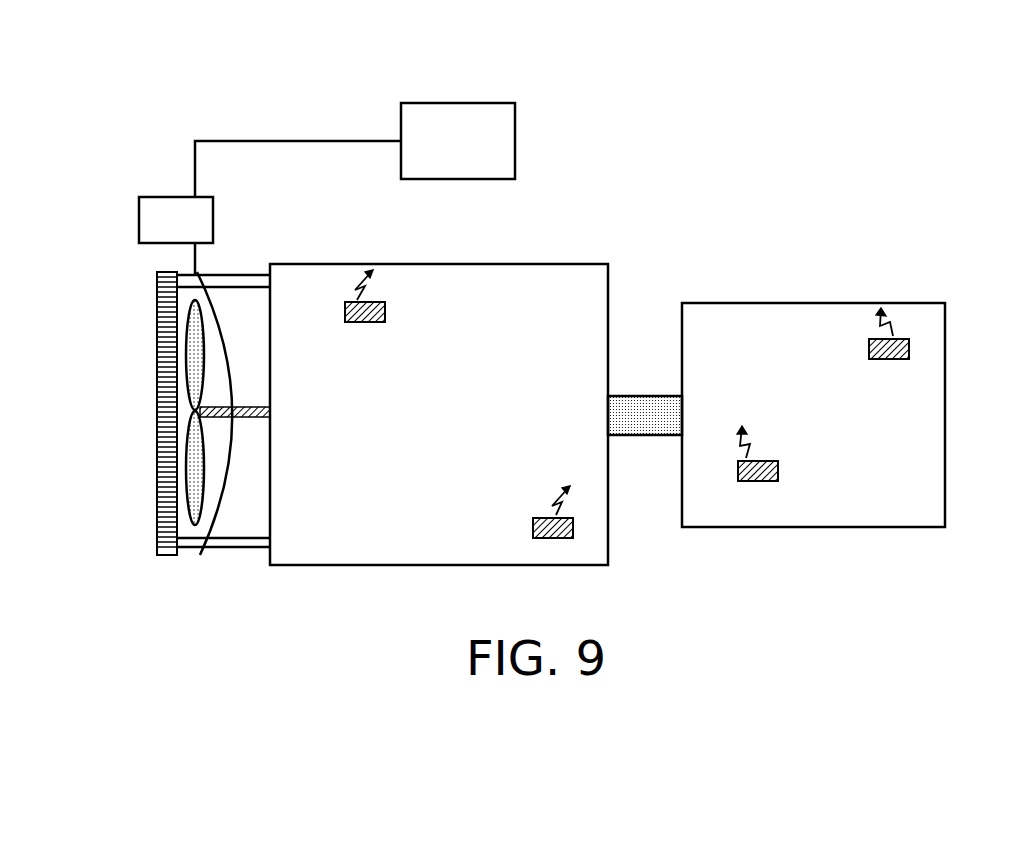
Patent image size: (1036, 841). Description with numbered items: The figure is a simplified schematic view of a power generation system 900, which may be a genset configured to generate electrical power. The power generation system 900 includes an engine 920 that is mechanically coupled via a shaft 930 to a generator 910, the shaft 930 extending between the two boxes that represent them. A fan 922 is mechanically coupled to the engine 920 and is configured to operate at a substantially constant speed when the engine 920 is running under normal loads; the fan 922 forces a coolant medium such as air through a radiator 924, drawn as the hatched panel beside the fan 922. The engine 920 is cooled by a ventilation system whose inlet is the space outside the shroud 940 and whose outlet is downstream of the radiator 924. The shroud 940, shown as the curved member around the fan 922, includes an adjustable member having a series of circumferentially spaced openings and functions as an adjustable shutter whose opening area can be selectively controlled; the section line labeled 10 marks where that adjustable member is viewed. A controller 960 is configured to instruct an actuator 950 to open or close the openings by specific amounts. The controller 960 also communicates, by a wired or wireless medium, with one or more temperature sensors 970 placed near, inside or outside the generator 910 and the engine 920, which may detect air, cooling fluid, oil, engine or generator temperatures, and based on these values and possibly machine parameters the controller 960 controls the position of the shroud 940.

The power generation system 900 is at (851, 127).
The generator 910 is at (813, 415).
The engine 920 is at (439, 414).
The fan 922 is at (195, 465).
The radiator 924 is at (157, 364).
The shaft 930 is at (647, 396).
The shroud 940 is at (225, 523).
The actuator 950 is at (176, 236).
The controller 960 is at (355, 150).
The temperature sensors 970 is at (385, 310).
The section line 10 is at (215, 576).